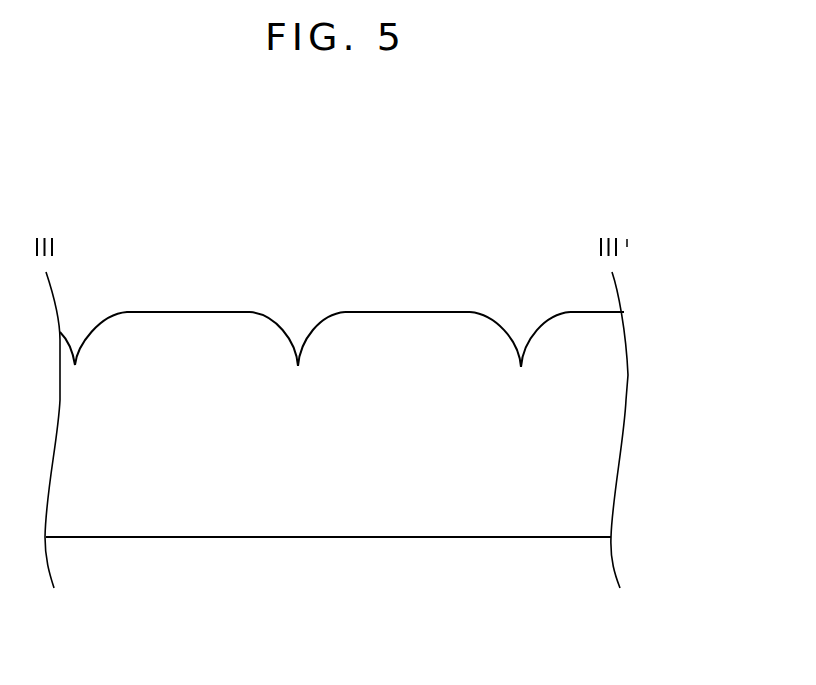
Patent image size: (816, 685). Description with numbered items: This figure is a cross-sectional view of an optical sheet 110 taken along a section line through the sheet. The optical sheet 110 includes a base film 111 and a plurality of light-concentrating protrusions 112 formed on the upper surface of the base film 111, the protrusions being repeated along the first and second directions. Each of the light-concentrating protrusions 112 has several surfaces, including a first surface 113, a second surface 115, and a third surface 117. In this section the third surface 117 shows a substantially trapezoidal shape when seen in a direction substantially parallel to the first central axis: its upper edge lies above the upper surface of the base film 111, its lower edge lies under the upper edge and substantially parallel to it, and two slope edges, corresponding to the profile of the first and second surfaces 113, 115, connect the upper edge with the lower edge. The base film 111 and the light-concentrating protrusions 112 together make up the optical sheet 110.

The optical sheet 110 is at (707, 325).
The base film 111 is at (593, 485).
The light-concentrating protrusions 112 is at (593, 340).
The first surface 113 is at (313, 321).
The second surface 115 is at (500, 321).
The third surface 117 is at (407, 340).